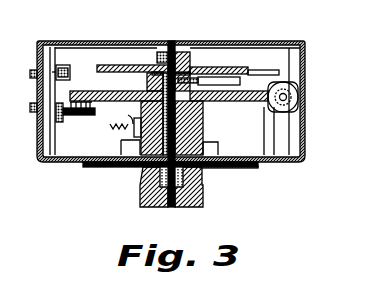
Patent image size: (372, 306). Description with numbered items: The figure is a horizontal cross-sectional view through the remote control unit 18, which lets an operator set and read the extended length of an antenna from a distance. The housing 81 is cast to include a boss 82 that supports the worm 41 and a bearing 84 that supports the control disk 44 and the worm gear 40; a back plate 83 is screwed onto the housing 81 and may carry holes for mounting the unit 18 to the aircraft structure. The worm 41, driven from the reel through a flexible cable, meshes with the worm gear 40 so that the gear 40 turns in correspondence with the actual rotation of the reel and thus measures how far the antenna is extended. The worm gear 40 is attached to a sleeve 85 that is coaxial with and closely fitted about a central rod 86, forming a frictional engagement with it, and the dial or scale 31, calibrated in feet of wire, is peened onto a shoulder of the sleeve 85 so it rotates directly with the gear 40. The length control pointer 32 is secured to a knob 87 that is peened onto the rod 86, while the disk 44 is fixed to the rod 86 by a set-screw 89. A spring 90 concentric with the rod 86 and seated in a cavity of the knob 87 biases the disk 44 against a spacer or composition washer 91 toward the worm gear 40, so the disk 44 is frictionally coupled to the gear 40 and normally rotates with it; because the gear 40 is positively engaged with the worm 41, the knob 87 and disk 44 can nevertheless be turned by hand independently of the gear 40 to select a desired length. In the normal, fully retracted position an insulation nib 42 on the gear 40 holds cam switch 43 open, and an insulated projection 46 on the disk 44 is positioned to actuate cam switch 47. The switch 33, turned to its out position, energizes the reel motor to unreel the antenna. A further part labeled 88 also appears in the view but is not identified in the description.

The remote control unit 18 is at (188, 197).
The scale 31 is at (243, 168).
The length control pointer 32 is at (115, 168).
The switch 33 is at (218, 147).
The worm gear 40 is at (103, 92).
The worm 41 is at (288, 96).
The insulation nib 42 is at (72, 117).
The cam switch 43 is at (60, 123).
The control disk 44 is at (108, 64).
The insulated projection 46 is at (259, 68).
The cam switch 47 is at (59, 65).
The housing 81 is at (303, 124).
The boss 82 is at (285, 144).
The back plate 83 is at (281, 43).
The bearing 84 is at (203, 123).
The sleeve 85 is at (136, 119).
The rod 86 is at (179, 44).
The knob 87 is at (203, 207).
The shaft end 88 is at (170, 207).
The set-screw 89 is at (158, 53).
The spring 90 is at (200, 172).
The composition washer 91 is at (198, 76).